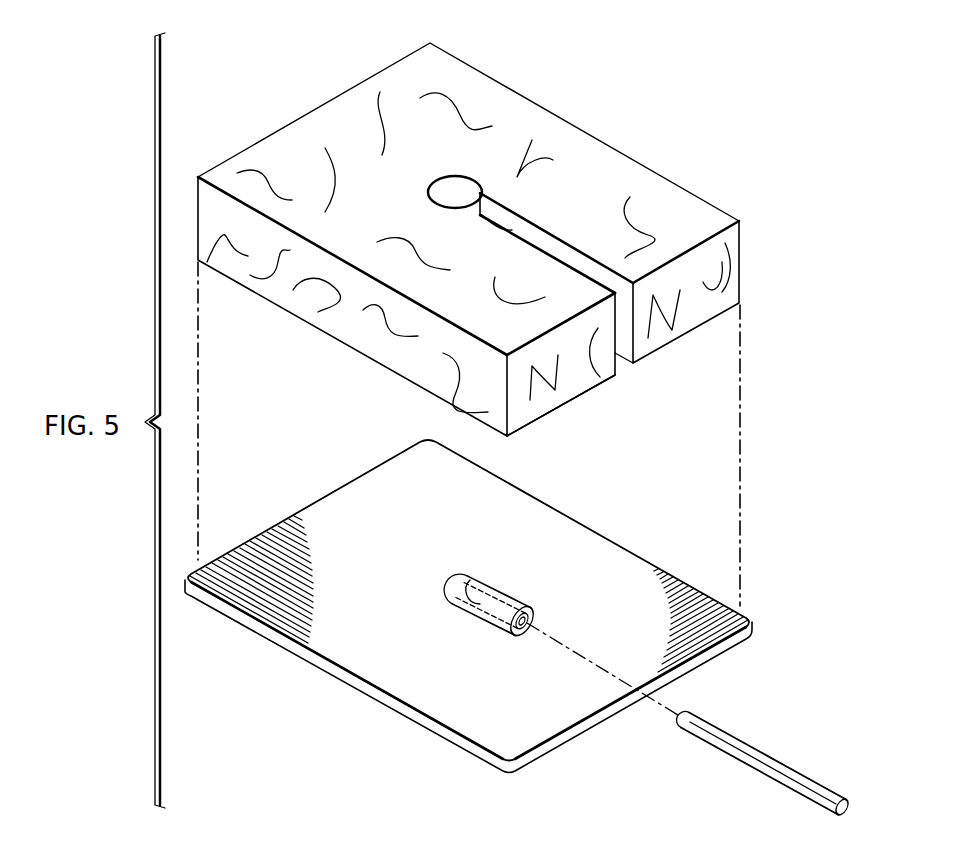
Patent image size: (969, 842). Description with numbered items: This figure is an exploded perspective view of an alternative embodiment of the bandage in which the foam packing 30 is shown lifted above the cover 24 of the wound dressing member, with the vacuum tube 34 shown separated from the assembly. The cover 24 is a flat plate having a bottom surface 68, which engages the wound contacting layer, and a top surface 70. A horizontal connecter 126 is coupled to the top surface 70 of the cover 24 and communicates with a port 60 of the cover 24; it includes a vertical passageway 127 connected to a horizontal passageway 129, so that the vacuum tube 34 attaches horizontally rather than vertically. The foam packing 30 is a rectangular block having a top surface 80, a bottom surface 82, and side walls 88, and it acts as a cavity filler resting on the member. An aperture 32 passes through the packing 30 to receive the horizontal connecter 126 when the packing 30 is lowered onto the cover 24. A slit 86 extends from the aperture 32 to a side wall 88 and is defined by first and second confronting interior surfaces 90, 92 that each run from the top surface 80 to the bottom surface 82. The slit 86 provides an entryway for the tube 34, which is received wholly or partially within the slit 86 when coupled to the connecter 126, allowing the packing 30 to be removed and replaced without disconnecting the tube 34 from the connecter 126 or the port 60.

The cover 24 is at (670, 543).
The foam packing 30 is at (694, 134).
The aperture 32 is at (447, 177).
The vacuum tube 34 is at (773, 757).
The port 60 is at (452, 597).
The bottom surface 68 is at (712, 663).
The top surface 70 is at (592, 537).
The top surface 80 is at (468, 75).
The bottom surface 82 is at (537, 434).
The slit 86 is at (636, 384).
The side wall 88 is at (318, 108).
The first interior surface 90 is at (543, 247).
The second interior surface 92 is at (478, 213).
The horizontal connecter 126 is at (494, 563).
The vertical passageway 127 is at (467, 577).
The horizontal passageway 129 is at (510, 597).